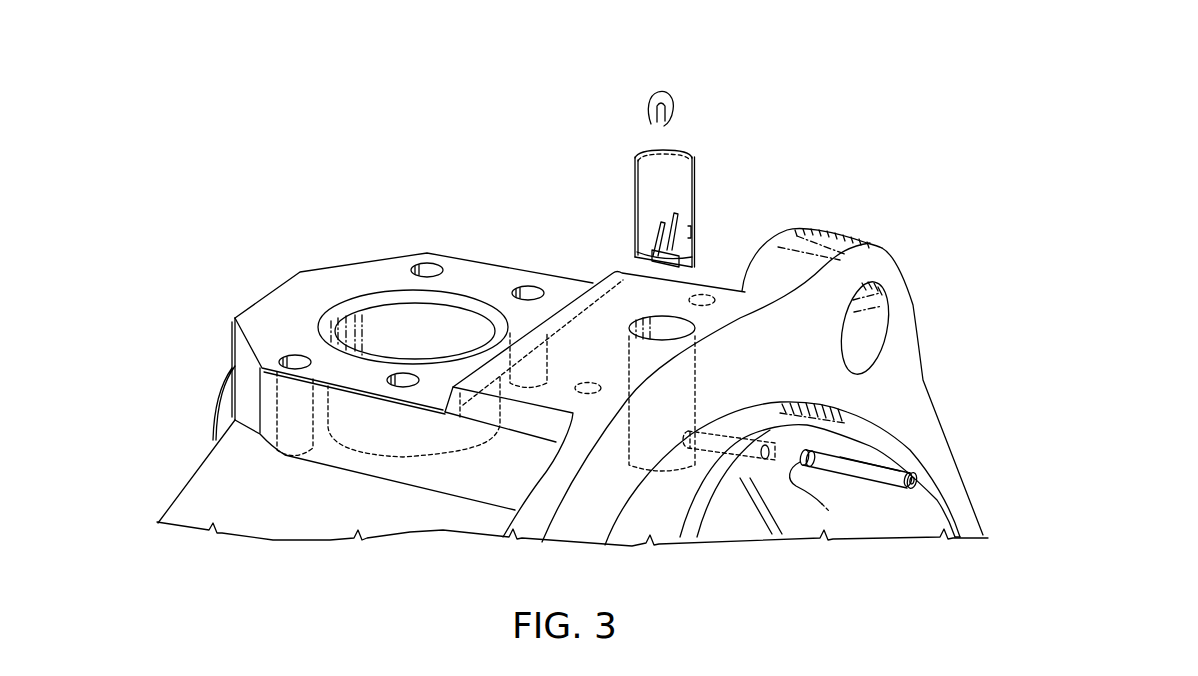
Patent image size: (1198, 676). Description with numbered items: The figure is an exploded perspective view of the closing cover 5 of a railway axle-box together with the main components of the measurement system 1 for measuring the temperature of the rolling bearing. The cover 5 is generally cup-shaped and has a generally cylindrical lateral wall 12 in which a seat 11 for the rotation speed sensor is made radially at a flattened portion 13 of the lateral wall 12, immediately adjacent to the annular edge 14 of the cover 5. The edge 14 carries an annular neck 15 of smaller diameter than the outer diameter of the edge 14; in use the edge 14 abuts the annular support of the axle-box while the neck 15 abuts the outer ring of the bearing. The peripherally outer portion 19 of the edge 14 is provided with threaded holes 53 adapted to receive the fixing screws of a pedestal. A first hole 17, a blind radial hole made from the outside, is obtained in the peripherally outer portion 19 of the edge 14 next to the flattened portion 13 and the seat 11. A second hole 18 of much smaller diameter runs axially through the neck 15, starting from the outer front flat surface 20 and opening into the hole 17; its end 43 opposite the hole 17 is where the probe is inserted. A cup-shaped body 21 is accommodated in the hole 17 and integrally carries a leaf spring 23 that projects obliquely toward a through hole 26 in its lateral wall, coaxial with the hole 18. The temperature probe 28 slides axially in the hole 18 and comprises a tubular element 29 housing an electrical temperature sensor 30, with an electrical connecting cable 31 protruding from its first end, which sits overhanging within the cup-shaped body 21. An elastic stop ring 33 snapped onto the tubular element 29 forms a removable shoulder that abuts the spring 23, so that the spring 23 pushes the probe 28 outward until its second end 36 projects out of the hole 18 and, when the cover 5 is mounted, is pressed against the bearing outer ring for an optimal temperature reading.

The measurement system 1 is at (868, 186).
The closing cover 5 is at (383, 550).
The seat 11 is at (408, 331).
The lateral wall 12 is at (277, 522).
The flattened portion 13 is at (285, 318).
The annular edge 14 is at (905, 342).
The annular neck 15 is at (968, 533).
The first hole 17 is at (672, 326).
The second hole 18 is at (726, 440).
The peripherally outer portion 19 is at (590, 334).
The outer front flat surface 20 is at (715, 509).
The cup-shaped body 21 is at (703, 181).
The leaf spring 23 is at (678, 223).
The through hole 26 is at (696, 240).
The temperature probe 28 is at (871, 491).
The tubular element 29 is at (880, 469).
The electrical temperature sensor 30 is at (928, 482).
The electrical connecting cable 31 is at (794, 486).
The elastic stop ring 33 is at (672, 100).
The second end 36 is at (905, 489).
The end of hole 43 is at (766, 438).
The threaded holes 53 is at (690, 294).